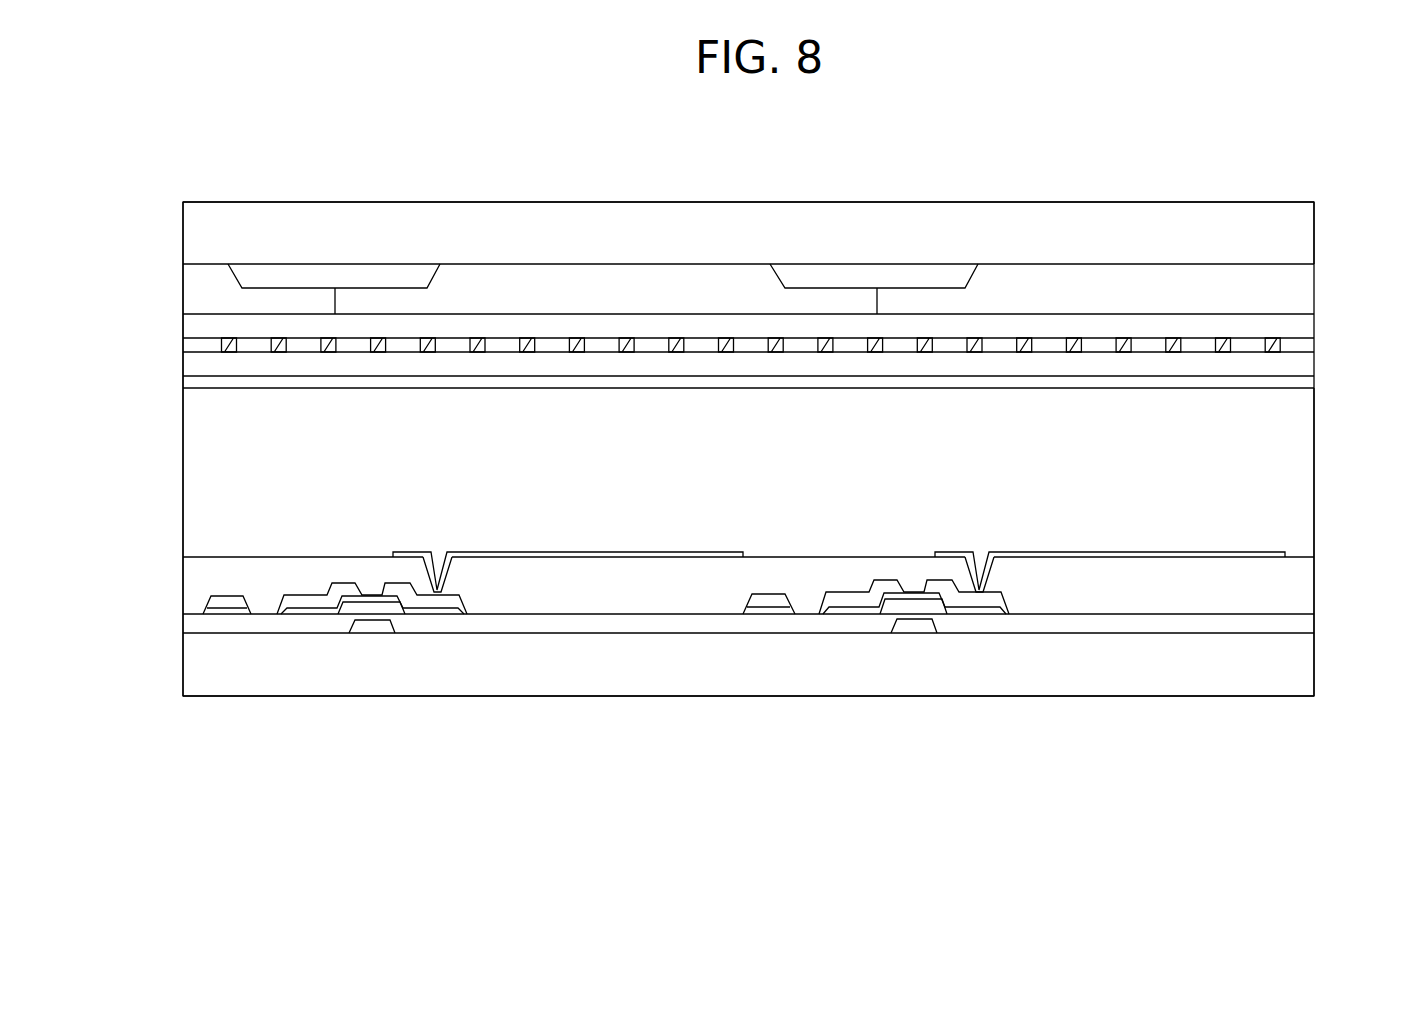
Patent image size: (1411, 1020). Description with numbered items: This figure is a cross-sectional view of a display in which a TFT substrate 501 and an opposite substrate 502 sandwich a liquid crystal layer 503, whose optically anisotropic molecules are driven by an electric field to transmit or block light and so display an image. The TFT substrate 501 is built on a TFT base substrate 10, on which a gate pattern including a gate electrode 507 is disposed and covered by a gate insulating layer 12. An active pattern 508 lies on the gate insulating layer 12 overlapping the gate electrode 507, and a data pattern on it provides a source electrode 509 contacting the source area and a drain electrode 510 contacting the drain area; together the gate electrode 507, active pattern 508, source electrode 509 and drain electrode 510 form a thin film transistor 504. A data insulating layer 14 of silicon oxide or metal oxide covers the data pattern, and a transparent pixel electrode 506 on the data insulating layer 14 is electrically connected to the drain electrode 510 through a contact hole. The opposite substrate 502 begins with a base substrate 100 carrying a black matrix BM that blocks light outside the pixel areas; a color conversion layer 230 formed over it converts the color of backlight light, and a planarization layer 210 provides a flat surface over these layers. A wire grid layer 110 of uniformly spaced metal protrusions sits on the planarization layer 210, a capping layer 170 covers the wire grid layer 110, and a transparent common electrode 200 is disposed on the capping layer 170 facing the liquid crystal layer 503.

The base substrate 100 is at (1312, 235).
The color conversion layer 230 is at (1312, 280).
The black matrix BM is at (903, 277).
The planarization layer 210 is at (1312, 323).
The wire grid layer 110 is at (1278, 342).
The capping layer 170 is at (1312, 357).
The common electrode 200 is at (1312, 380).
The liquid crystal layer 503 is at (1312, 471).
The data insulating layer 14 is at (1312, 584).
The gate insulating layer 12 is at (1312, 621).
The TFT base substrate 10 is at (1312, 661).
The TFT substrate 501 is at (175, 561).
The opposite substrate 502 is at (175, 203).
The thin film transistor 504 is at (918, 690).
The pixel electrode 506 is at (1088, 560).
The gate electrode 507 is at (910, 625).
The active pattern 508 is at (917, 605).
The source electrode 509 is at (857, 600).
The drain electrode 510 is at (988, 598).